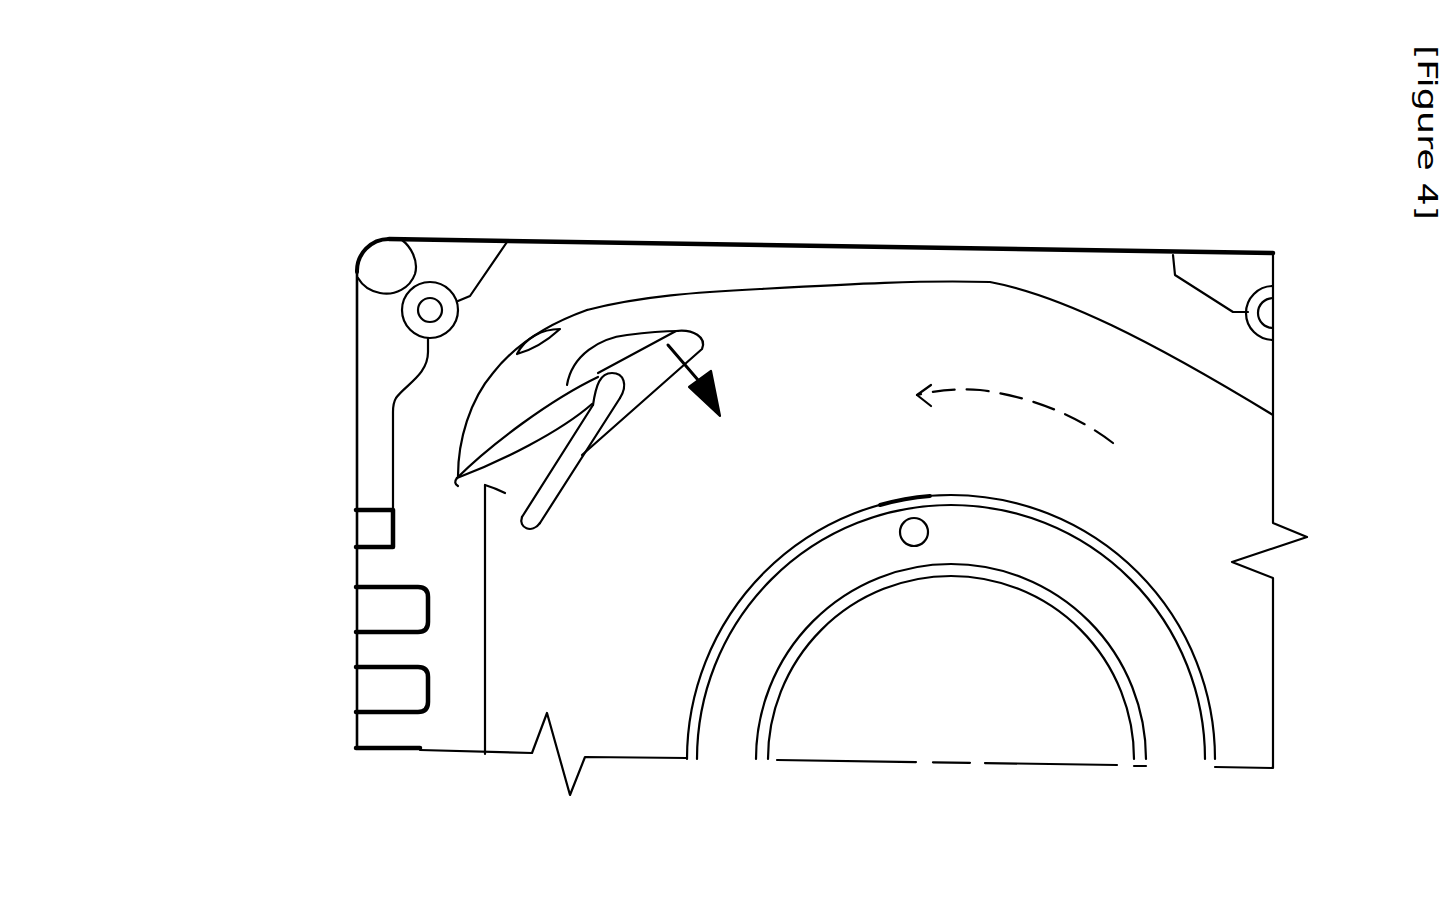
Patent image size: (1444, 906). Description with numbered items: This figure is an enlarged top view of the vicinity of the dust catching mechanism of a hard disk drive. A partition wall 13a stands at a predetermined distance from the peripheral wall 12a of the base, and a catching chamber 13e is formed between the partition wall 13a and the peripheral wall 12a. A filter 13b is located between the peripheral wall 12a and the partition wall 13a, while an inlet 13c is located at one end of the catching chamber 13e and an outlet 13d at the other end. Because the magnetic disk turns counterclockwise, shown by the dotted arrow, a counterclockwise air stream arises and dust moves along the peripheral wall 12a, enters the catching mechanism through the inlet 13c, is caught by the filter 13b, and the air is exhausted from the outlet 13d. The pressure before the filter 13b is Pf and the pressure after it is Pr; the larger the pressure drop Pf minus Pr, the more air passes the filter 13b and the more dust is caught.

The peripheral wall 12a is at (788, 272).
The partition wall 13a is at (648, 379).
The filter 13b is at (525, 436).
The inlet 13c is at (672, 318).
The outlet 13d is at (502, 530).
The catching chamber 13e is at (523, 387).
The pressure before the filter Pf is at (550, 374).
The pressure after the filter Pr is at (483, 490).